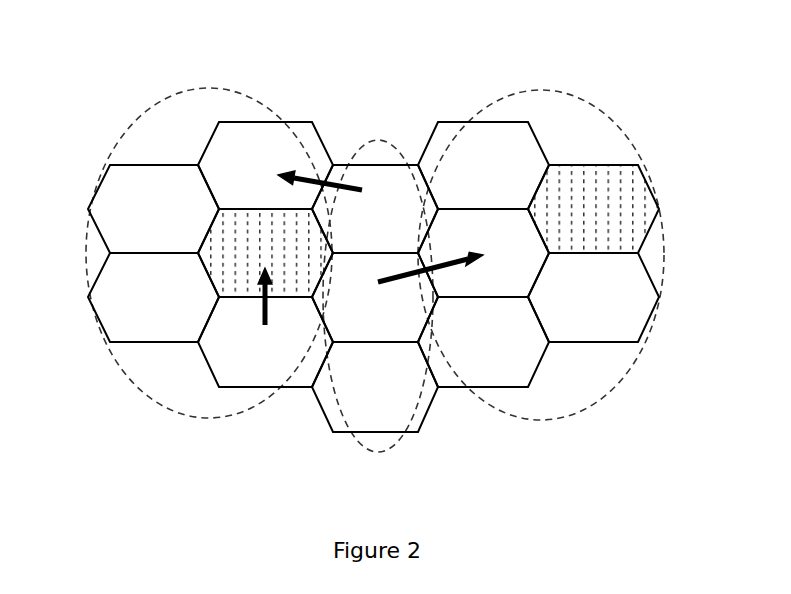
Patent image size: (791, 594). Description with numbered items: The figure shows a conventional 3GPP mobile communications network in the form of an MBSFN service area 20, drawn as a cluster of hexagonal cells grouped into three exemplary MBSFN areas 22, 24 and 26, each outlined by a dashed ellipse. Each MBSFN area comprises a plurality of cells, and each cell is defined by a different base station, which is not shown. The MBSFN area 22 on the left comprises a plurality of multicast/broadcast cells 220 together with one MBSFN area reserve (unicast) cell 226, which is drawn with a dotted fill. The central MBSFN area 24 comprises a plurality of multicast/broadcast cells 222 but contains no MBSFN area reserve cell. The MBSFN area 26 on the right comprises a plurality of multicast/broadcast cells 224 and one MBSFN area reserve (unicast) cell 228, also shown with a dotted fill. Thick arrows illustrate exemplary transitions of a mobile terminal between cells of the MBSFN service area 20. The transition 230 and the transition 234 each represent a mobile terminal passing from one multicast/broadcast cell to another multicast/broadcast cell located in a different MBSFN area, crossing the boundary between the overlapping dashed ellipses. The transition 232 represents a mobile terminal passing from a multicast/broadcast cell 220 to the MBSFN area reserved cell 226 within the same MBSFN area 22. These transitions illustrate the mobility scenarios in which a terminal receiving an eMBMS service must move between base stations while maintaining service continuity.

The MBSFN service area 20 is at (143, 47).
The MBSFN area 22 is at (145, 126).
The MBSFN area 24 is at (381, 140).
The MBSFN area 26 is at (620, 130).
The multicast/broadcast cells 220 is at (138, 207).
The multicast/broadcast cells 222 is at (354, 235).
The multicast/broadcast cells 224 is at (466, 168).
The MBSFN area reserve (unicast) cell 226 is at (245, 250).
The MBSFN area reserve (unicast) cell 228 is at (581, 228).
The transition 230 is at (297, 170).
The transition 232 is at (262, 302).
The transition 234 is at (467, 255).